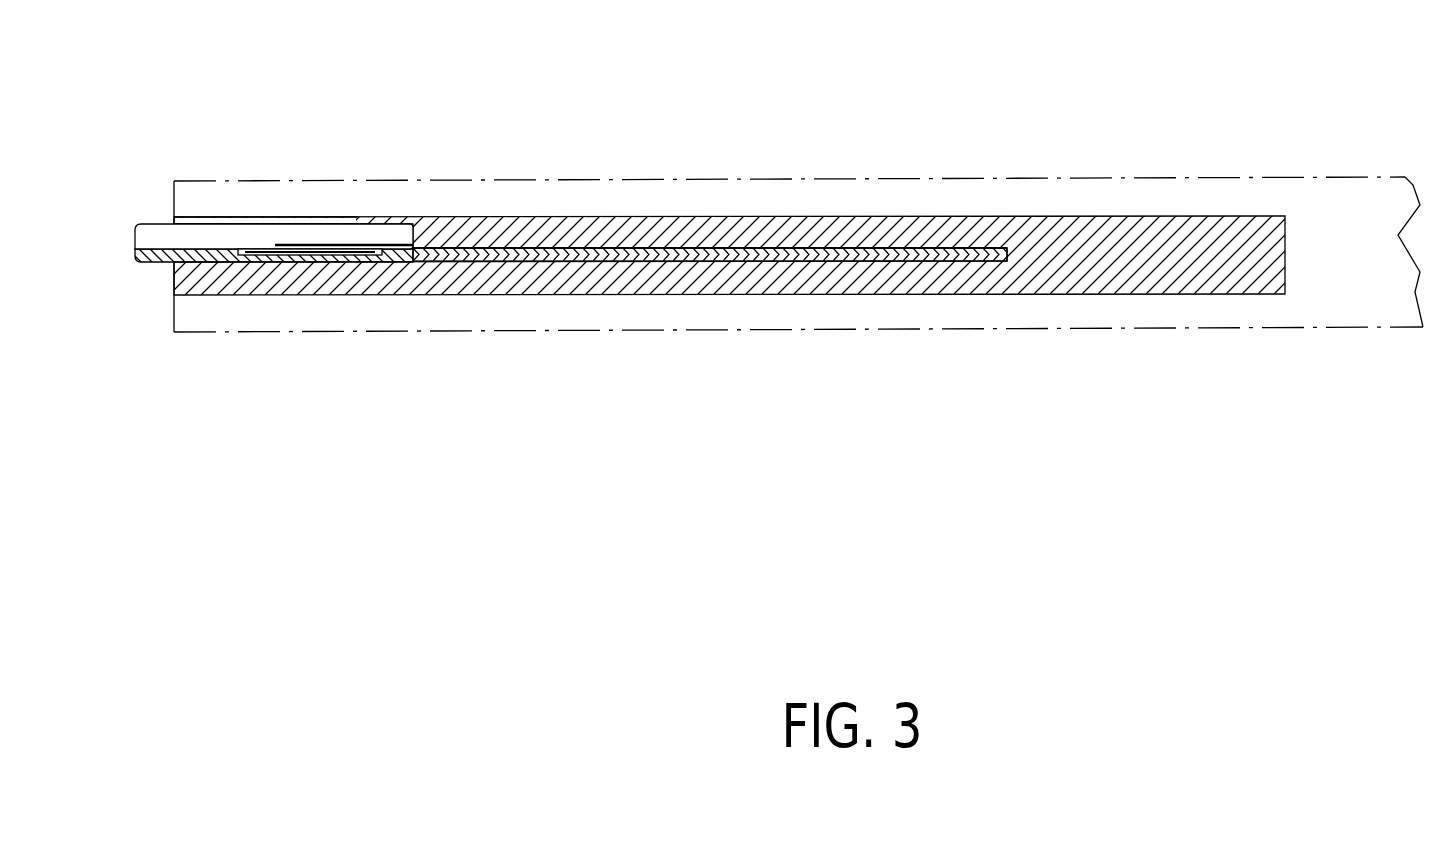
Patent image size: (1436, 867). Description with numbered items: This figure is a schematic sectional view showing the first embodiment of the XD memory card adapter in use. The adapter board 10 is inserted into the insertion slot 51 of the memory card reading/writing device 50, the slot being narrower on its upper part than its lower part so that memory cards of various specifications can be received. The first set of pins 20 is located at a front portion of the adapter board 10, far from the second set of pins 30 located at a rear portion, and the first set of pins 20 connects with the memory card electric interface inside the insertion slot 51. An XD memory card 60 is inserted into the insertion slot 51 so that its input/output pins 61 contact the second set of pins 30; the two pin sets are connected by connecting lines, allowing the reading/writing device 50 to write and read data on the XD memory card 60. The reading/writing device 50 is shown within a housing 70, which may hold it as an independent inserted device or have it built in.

The adapter board 10 is at (572, 255).
The first set of pins 20 is at (838, 247).
The second set of pins 30 is at (321, 257).
The memory card reading/writing device 50 is at (899, 280).
The insertion slot 51 is at (232, 260).
The XD memory card 60 is at (162, 238).
The input/output pins 61 is at (383, 257).
The housing 70 is at (943, 178).